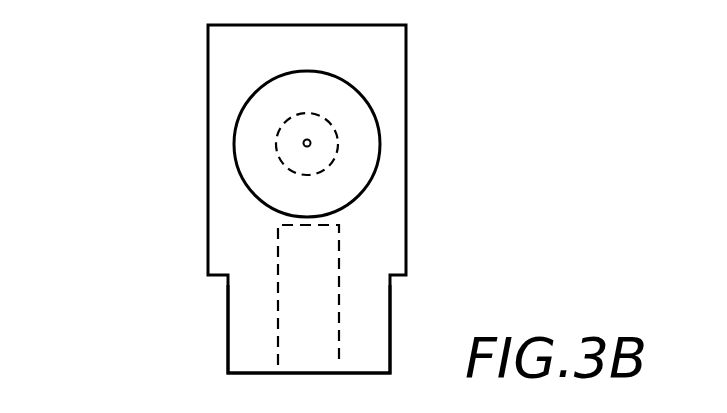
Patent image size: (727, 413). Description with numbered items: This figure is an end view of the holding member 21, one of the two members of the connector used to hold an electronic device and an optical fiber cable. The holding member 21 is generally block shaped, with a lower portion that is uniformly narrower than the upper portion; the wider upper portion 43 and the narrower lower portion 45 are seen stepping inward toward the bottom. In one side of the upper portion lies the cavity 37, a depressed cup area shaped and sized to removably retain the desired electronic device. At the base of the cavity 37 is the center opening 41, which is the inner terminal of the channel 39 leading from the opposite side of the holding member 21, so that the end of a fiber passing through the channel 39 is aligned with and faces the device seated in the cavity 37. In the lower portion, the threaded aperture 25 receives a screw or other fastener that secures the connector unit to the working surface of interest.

The holding member 21 is at (93, 64).
The threaded aperture 25 is at (320, 340).
The cavity 37 is at (380, 132).
The channel 39 is at (327, 117).
The center opening 41 is at (304, 140).
The upper body 43 is at (207, 196).
The lower stem 45 is at (228, 312).